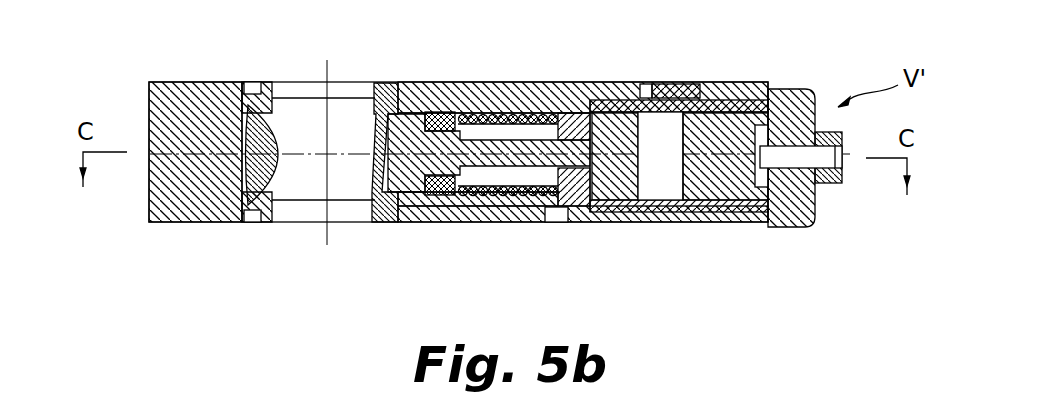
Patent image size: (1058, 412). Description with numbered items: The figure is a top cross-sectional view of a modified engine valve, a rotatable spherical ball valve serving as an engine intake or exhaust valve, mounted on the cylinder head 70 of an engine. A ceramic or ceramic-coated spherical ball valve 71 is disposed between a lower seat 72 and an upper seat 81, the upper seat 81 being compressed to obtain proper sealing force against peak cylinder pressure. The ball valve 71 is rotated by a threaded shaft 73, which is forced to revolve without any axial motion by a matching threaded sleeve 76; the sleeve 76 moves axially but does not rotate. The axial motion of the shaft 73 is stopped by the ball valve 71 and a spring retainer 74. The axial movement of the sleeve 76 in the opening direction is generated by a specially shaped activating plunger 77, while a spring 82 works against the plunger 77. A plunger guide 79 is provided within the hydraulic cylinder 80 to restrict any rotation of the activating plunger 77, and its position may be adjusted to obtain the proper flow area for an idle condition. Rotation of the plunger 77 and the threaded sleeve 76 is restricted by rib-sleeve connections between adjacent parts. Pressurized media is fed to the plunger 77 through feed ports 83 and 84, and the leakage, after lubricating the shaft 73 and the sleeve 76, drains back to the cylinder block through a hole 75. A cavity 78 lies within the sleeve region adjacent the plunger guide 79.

The cylinder head 70 is at (165, 224).
The spherical ball valve 71 is at (246, 168).
The lower seat 72 is at (252, 222).
The threaded shaft 73 is at (374, 222).
The spring retainer 74 is at (432, 222).
The hole 75 is at (555, 224).
The threaded sleeve 76 is at (583, 222).
The activating plunger 77 is at (622, 222).
The cavity 78 is at (690, 222).
The plunger guide 79 is at (748, 177).
The hydraulic cylinder 80 is at (772, 200).
The upper seat 81 is at (250, 80).
The spring 82 is at (515, 98).
The feed port 83 is at (690, 95).
The feed port 84 is at (707, 95).